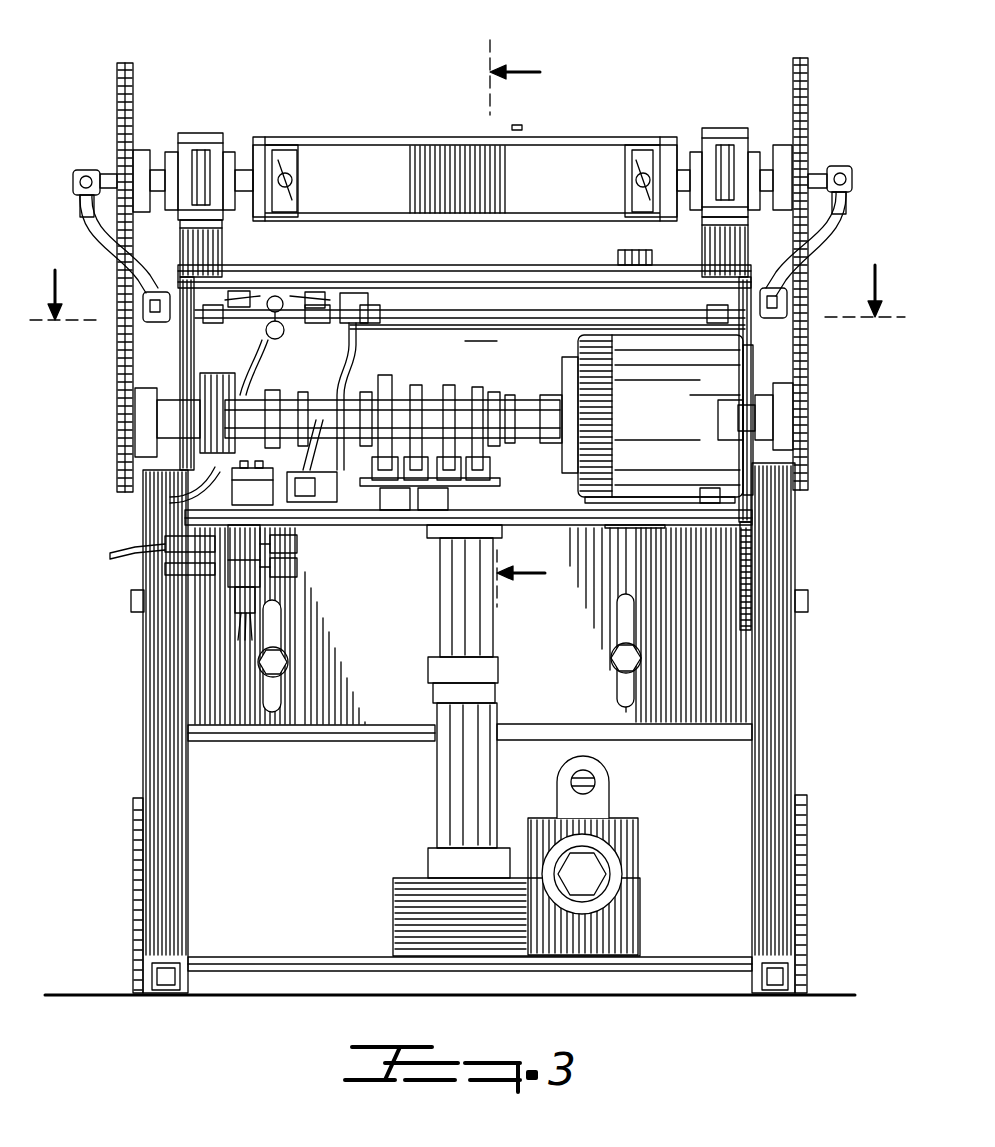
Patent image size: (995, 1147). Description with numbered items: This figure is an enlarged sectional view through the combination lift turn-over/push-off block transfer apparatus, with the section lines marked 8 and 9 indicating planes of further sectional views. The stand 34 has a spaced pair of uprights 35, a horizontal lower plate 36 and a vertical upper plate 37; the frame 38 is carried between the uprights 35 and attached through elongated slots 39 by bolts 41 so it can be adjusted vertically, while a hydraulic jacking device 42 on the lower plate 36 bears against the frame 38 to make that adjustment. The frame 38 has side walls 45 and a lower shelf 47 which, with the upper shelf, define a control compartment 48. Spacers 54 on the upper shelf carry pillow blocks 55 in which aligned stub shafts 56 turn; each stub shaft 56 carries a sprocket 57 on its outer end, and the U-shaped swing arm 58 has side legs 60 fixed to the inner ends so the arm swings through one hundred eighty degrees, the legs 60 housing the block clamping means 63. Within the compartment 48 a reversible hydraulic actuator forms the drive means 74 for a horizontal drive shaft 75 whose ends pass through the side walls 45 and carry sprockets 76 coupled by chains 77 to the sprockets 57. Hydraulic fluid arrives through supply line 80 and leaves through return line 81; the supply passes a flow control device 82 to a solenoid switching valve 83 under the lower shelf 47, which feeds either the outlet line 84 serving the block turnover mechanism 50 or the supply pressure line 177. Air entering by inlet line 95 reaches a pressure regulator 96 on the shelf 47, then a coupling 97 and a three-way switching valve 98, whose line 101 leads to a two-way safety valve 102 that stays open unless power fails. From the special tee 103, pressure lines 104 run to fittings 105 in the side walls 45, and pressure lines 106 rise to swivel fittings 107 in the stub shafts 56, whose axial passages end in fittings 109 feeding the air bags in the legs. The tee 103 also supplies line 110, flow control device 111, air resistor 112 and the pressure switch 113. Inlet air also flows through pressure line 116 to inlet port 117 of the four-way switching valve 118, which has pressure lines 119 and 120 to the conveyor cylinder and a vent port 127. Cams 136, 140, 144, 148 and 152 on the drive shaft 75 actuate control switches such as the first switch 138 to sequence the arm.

The swivel fittings 107 is at (80, 170).
The sprocket 57 is at (170, 152).
The stub shaft 56 is at (145, 150).
The pillow block 55 is at (215, 133).
The side legs 60 is at (285, 145).
The block clamping means 63 is at (322, 172).
The fittings 109 is at (297, 178).
The swing arm 58 is at (460, 137).
The block turnover mechanism 50 is at (525, 128).
The spacers 54 is at (180, 242).
The inlet port 117 is at (240, 291).
The four-way switching valve 118 is at (276, 296).
The vent port 127 is at (315, 292).
The special tee 103 is at (350, 293).
The two-way switching valve 102 is at (395, 265).
The fittings 105 is at (705, 311).
The pressure lines 106 is at (110, 258).
The side walls 45 is at (180, 345).
The pressure line 119 is at (200, 380).
The pressure line 120 is at (284, 333).
The pressure line 116 is at (262, 360).
The line 101 is at (310, 400).
The line 110 is at (360, 345).
The fifth cam 152 is at (385, 375).
The fourth cam 148 is at (416, 385).
The compartment 48 is at (481, 331).
The pressure lines 104 is at (565, 322).
The third cam 144 is at (449, 385).
The second cam 140 is at (478, 387).
The first cam 136 is at (512, 398).
The chains 77 is at (117, 370).
The sprocket 76 is at (135, 450).
The three-way switching valve 98 is at (318, 445).
The first switch 138 is at (495, 478).
The drive shaft 75 is at (565, 477).
The air inlet line 95 is at (170, 500).
The flow control device 82 is at (165, 540).
The supply line 80 is at (110, 556).
The return line 81 is at (165, 568).
The pressure regulator 96 is at (265, 505).
The coupling 97 is at (300, 502).
The flow control device 111 is at (392, 510).
The air resistor 112 is at (430, 510).
The pressure switch 113 is at (520, 525).
The lower shelf 47 is at (630, 528).
The drive means 74 is at (700, 525).
The supply pressure line 177 is at (297, 543).
The switching valve 83 is at (262, 595).
The outlet line 84 is at (297, 570).
The bolts 41 is at (133, 602).
The elongated slots 39 is at (281, 700).
The uprights 35 is at (143, 762).
The upper plate 37 is at (335, 741).
The frame 38 is at (710, 728).
The lower plate 36 is at (300, 957).
The hydraulic jacking device 42 is at (428, 860).
The stand 34 is at (807, 868).
The section line 8 is at (467, 314).
The section line 9 is at (528, 323).